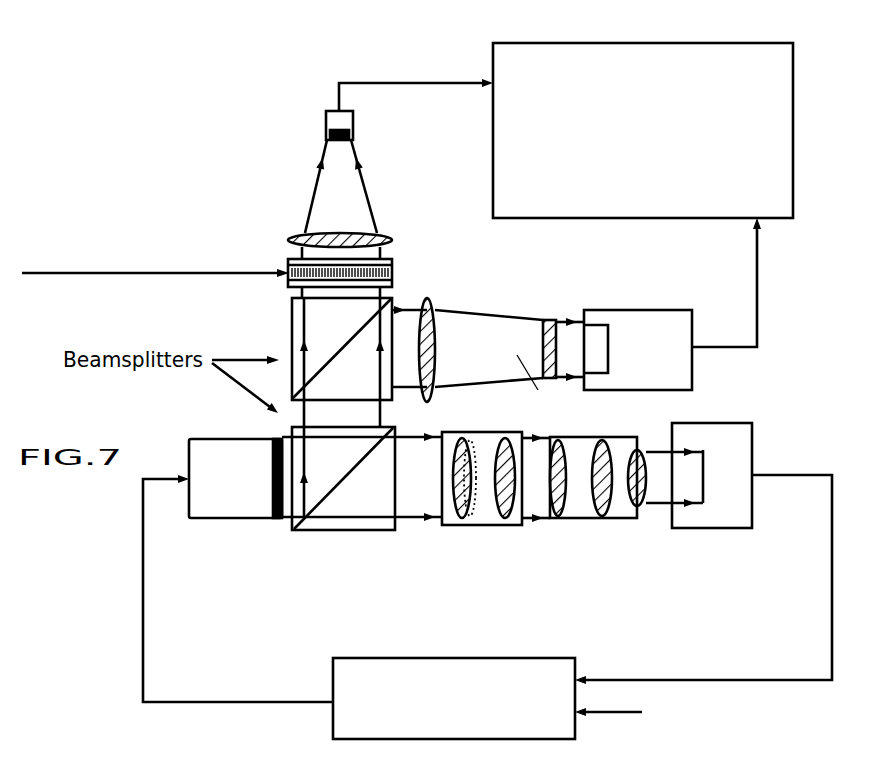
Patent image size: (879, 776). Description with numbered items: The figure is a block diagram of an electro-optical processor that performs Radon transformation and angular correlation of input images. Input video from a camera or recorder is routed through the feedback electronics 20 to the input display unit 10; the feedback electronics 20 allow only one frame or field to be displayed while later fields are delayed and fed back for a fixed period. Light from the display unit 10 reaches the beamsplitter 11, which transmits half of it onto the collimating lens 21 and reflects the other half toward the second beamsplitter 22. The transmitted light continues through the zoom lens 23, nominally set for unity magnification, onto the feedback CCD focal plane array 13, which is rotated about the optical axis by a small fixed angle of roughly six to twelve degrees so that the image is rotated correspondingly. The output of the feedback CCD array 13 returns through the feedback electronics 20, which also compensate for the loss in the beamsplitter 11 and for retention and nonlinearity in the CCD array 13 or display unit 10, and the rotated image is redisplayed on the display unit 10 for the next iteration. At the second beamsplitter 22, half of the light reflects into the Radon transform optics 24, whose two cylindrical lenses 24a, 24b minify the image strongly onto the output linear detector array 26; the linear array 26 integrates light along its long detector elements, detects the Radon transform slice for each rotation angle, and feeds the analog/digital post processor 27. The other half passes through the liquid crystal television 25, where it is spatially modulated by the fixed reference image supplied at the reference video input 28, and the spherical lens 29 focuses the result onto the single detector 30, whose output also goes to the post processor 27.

The input display unit 10 is at (235, 478).
The beamsplitter 11 is at (352, 532).
The feedback CCD focal plane array 13 is at (703, 553).
The feedback electronics 20 is at (451, 607).
The collimating lens 21 is at (487, 505).
The second beamsplitter 22 is at (291, 326).
The zoom lens 23 is at (626, 516).
The Radon transform optics 24 is at (567, 353).
The cylindrical lens 24a is at (437, 308).
The cylindrical lens 24b is at (549, 319).
The liquid crystal television 25 is at (389, 273).
The output linear detector array 26 is at (672, 304).
The analog/digital post processor 27 is at (643, 130).
The reference video input 28 is at (155, 276).
The spherical lens 29 is at (284, 240).
The single detector 30 is at (330, 156).